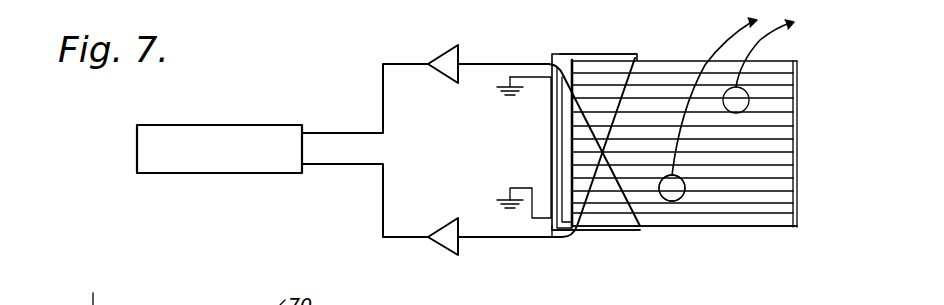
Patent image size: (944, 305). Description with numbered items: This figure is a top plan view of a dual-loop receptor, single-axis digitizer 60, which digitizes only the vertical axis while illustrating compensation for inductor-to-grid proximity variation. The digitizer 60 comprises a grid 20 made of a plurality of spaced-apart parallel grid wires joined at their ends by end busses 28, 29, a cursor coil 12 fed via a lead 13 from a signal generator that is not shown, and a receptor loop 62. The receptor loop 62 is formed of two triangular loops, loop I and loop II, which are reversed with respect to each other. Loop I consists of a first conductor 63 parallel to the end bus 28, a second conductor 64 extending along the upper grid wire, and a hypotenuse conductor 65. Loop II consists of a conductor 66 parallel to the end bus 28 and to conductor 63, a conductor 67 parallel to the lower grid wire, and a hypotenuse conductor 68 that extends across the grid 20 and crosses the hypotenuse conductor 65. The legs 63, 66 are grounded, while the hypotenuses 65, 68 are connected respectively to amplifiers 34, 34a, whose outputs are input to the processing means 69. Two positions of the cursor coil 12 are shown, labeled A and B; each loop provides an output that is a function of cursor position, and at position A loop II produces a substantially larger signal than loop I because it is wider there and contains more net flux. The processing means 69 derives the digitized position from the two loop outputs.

The processing means 69 is at (252, 124).
The amplifier 34a is at (447, 53).
The amplifier 34 is at (443, 252).
The hypotenuse conductor 68 is at (632, 207).
The hypotenuse conductor 65 is at (628, 95).
The second conductor 64 is at (565, 53).
The loop I is at (594, 53).
The first conductor 63 is at (551, 141).
The conductor 66 is at (558, 165).
The end bus 28 is at (572, 117).
The receptor loop 62 is at (551, 244).
The digitizer 60 is at (687, 54).
The end bus 29 is at (797, 183).
The grid 20 is at (776, 229).
The cursor position A is at (685, 193).
The cursor coil 12 is at (675, 201).
The cursor position B is at (750, 107).
The lead 13 is at (732, 38).
The conductor 67 is at (597, 233).
The loop II is at (618, 231).